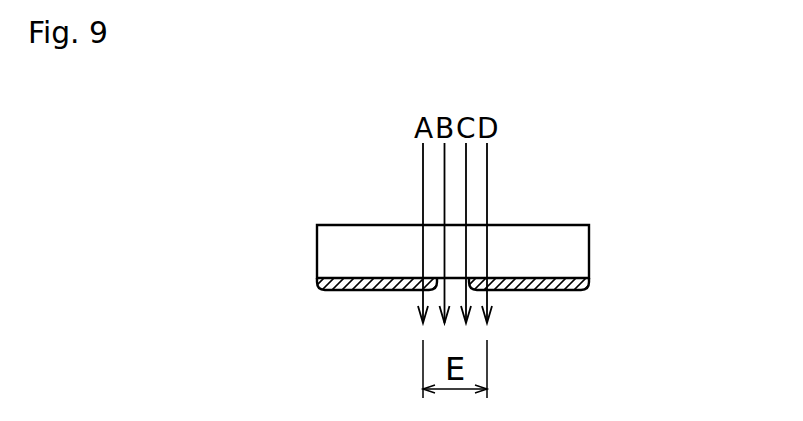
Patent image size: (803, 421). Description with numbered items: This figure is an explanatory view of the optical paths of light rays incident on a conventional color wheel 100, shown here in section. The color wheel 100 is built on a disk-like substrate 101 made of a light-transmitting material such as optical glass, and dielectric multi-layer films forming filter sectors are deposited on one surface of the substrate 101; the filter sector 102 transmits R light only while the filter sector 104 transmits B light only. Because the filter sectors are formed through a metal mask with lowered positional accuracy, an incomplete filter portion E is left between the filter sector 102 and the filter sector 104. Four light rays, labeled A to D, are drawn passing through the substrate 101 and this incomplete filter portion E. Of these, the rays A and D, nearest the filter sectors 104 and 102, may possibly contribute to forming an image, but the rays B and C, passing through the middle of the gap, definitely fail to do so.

The color wheel 100 is at (510, 251).
The substrate 101 is at (591, 253).
The filter sector 102 is at (530, 323).
The filter sector 104 is at (365, 292).